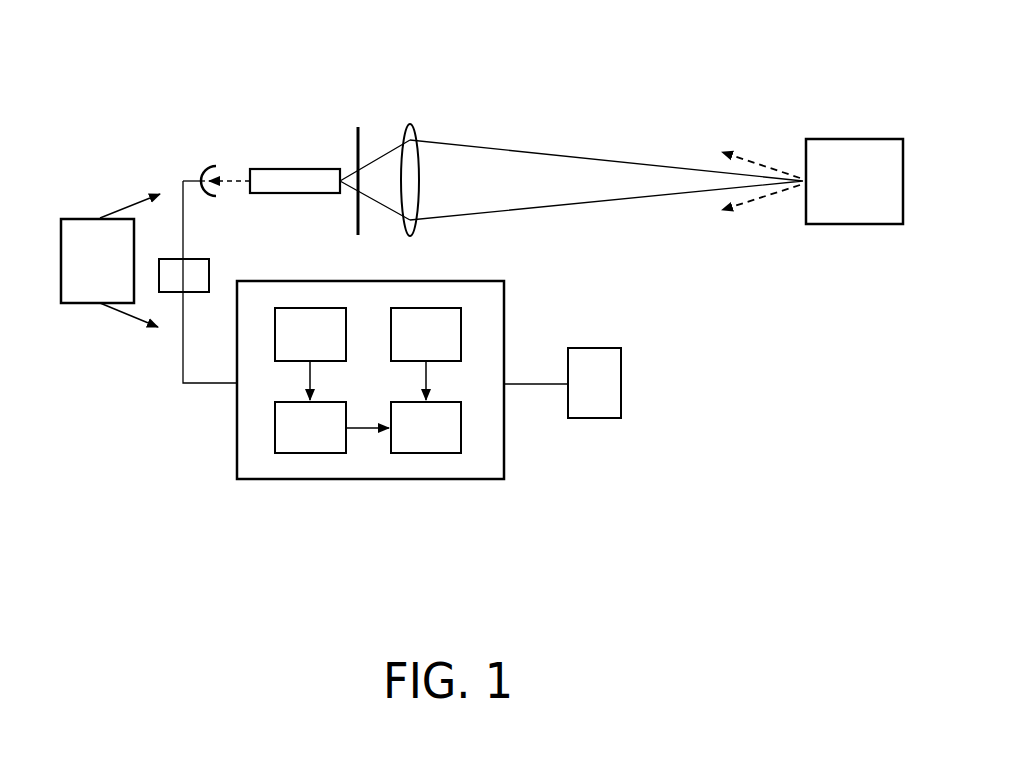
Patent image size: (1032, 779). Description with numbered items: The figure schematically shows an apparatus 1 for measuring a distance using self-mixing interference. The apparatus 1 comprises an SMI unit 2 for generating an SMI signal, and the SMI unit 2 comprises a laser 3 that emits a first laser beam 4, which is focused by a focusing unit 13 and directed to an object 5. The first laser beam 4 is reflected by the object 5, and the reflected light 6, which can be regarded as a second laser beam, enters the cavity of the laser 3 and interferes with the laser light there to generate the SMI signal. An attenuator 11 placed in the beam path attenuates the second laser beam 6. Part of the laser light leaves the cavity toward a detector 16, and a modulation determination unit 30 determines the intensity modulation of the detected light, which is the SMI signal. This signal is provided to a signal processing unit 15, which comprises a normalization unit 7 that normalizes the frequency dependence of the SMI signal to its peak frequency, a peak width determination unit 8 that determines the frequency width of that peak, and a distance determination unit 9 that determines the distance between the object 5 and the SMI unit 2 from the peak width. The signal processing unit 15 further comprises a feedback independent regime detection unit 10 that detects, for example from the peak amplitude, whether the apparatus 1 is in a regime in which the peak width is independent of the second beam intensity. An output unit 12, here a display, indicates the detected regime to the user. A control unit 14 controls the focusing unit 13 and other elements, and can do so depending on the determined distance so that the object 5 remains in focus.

The apparatus 1 is at (566, 509).
The SMI unit 2 is at (343, 98).
The laser 3 is at (288, 169).
The first laser beam 4 is at (392, 216).
The object 5 is at (848, 139).
The reflected light 6 is at (765, 196).
The normalization unit 7 is at (275, 335).
The peak width determination unit 8 is at (275, 434).
The distance determination unit 9 is at (428, 453).
The feedback independent regime detection unit 10 is at (461, 333).
The attenuator 11 is at (360, 127).
The output unit 12 is at (598, 418).
The focusing unit 13 is at (415, 135).
The control unit 14 is at (73, 219).
The signal processing unit 15 is at (360, 479).
The detector 16 is at (207, 166).
The modulation determination unit 30 is at (172, 259).